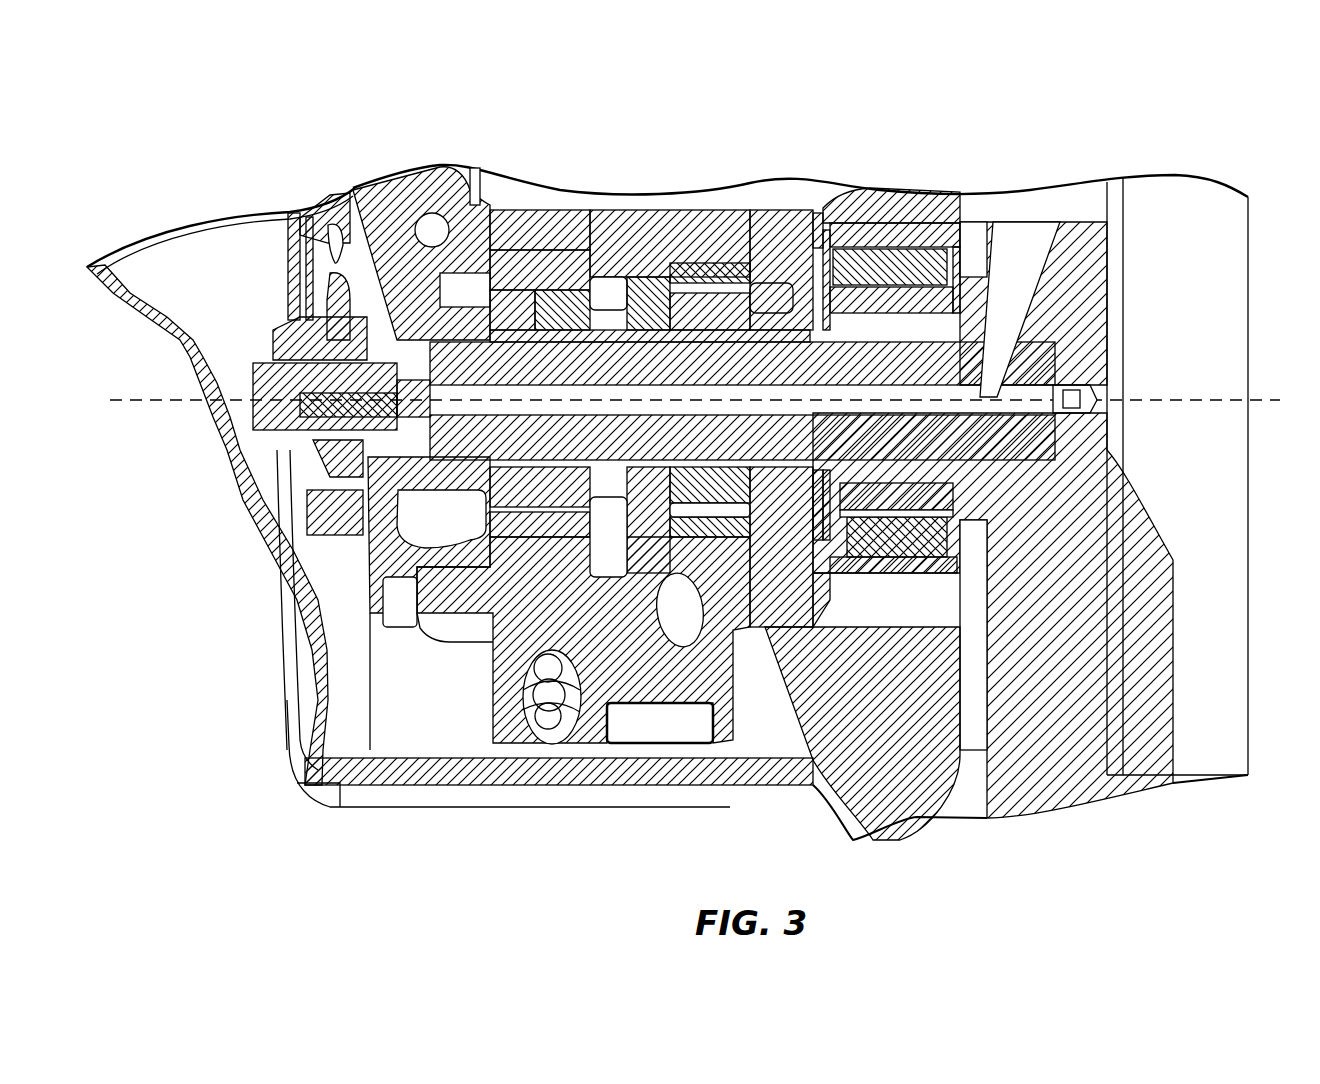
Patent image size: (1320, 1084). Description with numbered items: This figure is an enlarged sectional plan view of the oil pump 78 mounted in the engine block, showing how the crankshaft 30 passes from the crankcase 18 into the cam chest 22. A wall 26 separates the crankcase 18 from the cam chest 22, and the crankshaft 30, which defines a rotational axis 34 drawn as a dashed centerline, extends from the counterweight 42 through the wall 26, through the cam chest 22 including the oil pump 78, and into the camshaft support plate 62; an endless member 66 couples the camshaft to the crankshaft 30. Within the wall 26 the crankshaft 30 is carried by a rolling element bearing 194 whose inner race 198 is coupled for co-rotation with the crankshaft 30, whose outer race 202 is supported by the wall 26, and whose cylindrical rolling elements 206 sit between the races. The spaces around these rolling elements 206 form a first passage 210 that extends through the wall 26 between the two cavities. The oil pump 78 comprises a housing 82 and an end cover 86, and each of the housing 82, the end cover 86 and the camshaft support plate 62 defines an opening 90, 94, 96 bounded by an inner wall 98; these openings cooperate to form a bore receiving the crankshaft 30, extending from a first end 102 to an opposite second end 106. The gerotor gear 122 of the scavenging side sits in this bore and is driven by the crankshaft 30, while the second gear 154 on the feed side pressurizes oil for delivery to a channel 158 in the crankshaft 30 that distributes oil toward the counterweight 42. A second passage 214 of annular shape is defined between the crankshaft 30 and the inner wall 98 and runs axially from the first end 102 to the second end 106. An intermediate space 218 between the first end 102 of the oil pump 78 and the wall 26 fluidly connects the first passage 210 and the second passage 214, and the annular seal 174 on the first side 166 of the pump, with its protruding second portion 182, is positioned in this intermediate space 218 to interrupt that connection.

The crankcase 18 is at (1150, 258).
The cam chest 22 is at (539, 190).
The wall 26 is at (907, 200).
The crankshaft 30 is at (637, 363).
The rotational axis 34 is at (172, 405).
The counterweight 42 is at (1078, 763).
The camshaft support plate 62 is at (400, 193).
The endless member 66 is at (320, 305).
The oil pump 78 is at (603, 270).
The housing 82 is at (722, 210).
The end cover 86 is at (797, 240).
The opening 90 is at (575, 470).
The opening 94 is at (790, 672).
The opening 96 is at (398, 345).
The inner wall 98 is at (668, 582).
The first end 102 is at (822, 585).
The second end 106 is at (320, 527).
The gerotor gear 122 is at (703, 258).
The second gear 154 is at (530, 610).
The channel 158 is at (1028, 228).
The first side 166 is at (835, 537).
The seal 174 is at (832, 550).
The second portion 182 is at (830, 572).
The bearing 194 is at (880, 210).
The inner race 198 is at (855, 223).
The outer race 202 is at (925, 225).
The rolling elements 206 is at (967, 225).
The first passage 210 is at (862, 495).
The second passage 214 is at (528, 298).
The intermediate space 218 is at (817, 230).